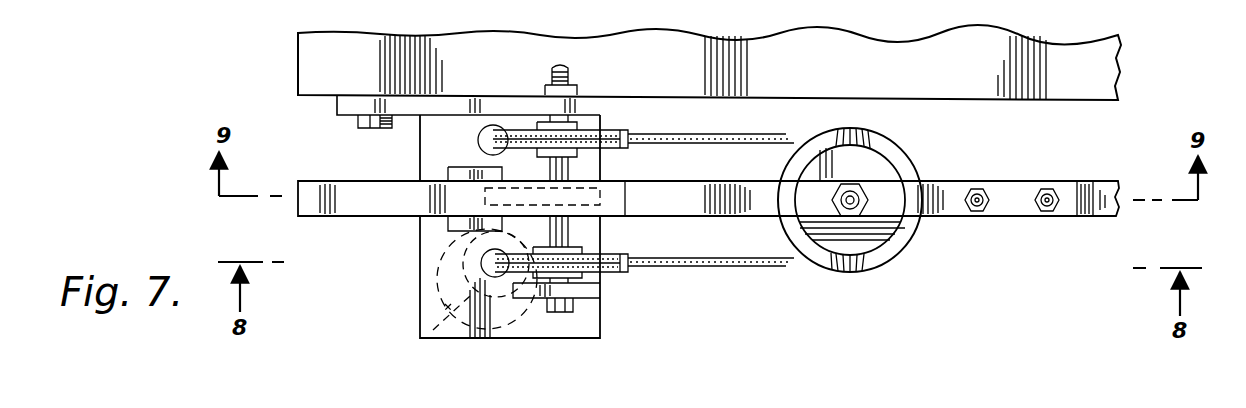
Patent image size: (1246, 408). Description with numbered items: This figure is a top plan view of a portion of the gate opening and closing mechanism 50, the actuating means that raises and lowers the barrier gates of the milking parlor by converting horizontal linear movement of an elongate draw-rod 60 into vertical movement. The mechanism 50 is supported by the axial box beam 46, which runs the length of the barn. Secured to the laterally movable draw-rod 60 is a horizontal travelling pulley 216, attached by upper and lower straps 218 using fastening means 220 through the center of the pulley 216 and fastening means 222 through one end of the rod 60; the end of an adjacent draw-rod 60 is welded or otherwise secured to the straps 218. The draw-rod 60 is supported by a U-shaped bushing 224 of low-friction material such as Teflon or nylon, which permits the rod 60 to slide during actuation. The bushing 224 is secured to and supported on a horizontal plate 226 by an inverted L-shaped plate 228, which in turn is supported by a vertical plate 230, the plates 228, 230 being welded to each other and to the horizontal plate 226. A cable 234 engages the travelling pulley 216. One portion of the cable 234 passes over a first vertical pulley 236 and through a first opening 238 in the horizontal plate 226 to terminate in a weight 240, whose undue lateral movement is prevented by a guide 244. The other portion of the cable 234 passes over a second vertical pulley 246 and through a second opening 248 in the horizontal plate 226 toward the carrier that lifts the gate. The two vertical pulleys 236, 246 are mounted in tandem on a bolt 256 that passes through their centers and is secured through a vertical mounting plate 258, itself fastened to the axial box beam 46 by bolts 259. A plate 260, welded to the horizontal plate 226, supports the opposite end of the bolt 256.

The axial box beam 46 is at (322, 77).
The vertical mounting plate 258 is at (350, 108).
The bolts 259 is at (383, 128).
The inverted L-shaped plate 228 is at (448, 170).
The second opening 248 is at (480, 145).
The second vertical pulley 246 is at (612, 128).
The cable 234 is at (787, 135).
The horizontal travelling pulley 216 is at (893, 150).
The fastening means 220 is at (862, 192).
The upper and lower straps 218 is at (1018, 185).
The bolt 256 is at (573, 170).
The vertical plate 230 is at (598, 212).
The draw-rod 60 is at (343, 205).
The fastening means 222 is at (977, 212).
The U-shaped bushing 224 is at (448, 228).
The first opening 238 is at (480, 263).
The first vertical pulley 236 is at (615, 272).
The guide 244 is at (433, 287).
The weight 240 is at (433, 318).
The plate 260 is at (590, 300).
The horizontal plate 226 is at (555, 325).
The gate opening and closing mechanism 50 is at (712, 280).